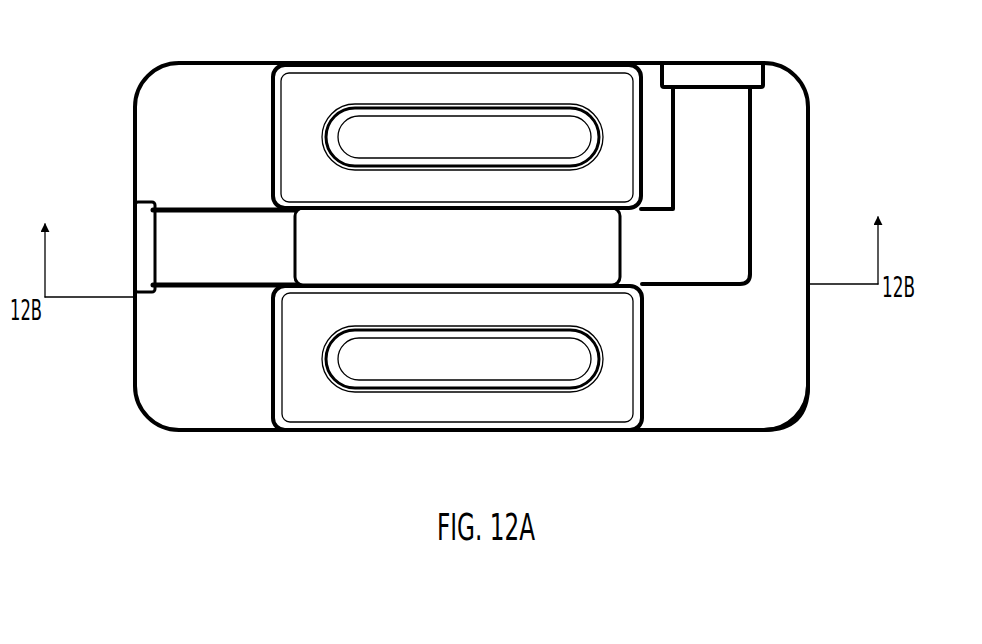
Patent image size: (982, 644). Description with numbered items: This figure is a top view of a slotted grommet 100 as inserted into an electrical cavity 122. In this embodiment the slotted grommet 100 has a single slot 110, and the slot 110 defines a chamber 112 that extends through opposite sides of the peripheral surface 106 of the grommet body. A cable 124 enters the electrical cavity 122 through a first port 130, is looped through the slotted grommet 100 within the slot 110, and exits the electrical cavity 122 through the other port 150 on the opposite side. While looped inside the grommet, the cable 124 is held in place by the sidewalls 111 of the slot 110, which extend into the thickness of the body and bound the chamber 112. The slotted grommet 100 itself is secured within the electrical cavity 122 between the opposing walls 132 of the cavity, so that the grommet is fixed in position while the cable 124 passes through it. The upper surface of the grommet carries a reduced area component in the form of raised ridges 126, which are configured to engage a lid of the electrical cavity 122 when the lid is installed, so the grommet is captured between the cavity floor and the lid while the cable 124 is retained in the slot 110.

The slotted grommet 100 is at (579, 84).
The peripheral surface 106 is at (272, 100).
The slot 110 is at (266, 289).
The sidewalls 111 is at (632, 281).
The chamber 112 is at (650, 198).
The electrical cavity 122 is at (176, 104).
The cable 124 is at (713, 215).
The raised ridges 126 is at (386, 130).
The first port 130 is at (709, 80).
The opposing walls 132 is at (690, 428).
The other port 150 is at (142, 220).